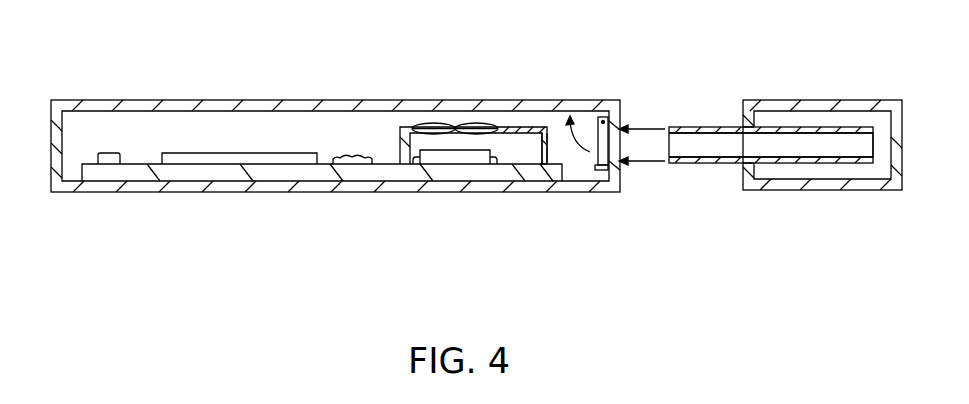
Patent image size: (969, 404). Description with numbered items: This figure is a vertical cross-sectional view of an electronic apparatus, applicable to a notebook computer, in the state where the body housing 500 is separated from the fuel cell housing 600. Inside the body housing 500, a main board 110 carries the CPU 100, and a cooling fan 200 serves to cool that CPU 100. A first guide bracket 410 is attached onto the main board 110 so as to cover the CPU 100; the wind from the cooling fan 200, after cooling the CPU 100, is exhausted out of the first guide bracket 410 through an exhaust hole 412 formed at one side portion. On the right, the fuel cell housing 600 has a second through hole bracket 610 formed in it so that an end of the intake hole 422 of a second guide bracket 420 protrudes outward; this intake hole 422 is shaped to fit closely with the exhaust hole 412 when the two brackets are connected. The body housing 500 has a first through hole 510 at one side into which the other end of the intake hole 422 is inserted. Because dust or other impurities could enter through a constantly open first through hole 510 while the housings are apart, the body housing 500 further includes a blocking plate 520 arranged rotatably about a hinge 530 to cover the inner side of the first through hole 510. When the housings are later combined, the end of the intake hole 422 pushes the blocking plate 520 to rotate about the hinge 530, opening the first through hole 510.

The CPU 100 is at (436, 158).
The main board 110 is at (172, 173).
The cooling fan 200 is at (477, 123).
The first guide bracket 410 is at (400, 126).
The exhaust hole 412 is at (545, 150).
The second guide bracket 420 is at (819, 127).
The intake hole 422 is at (683, 147).
The body housing 500 is at (132, 106).
The first through hole 510 is at (614, 143).
The blocking plate 520 is at (597, 170).
The hinge 530 is at (600, 113).
The fuel cell housing 600 is at (877, 105).
The second through hole bracket 610 is at (757, 123).